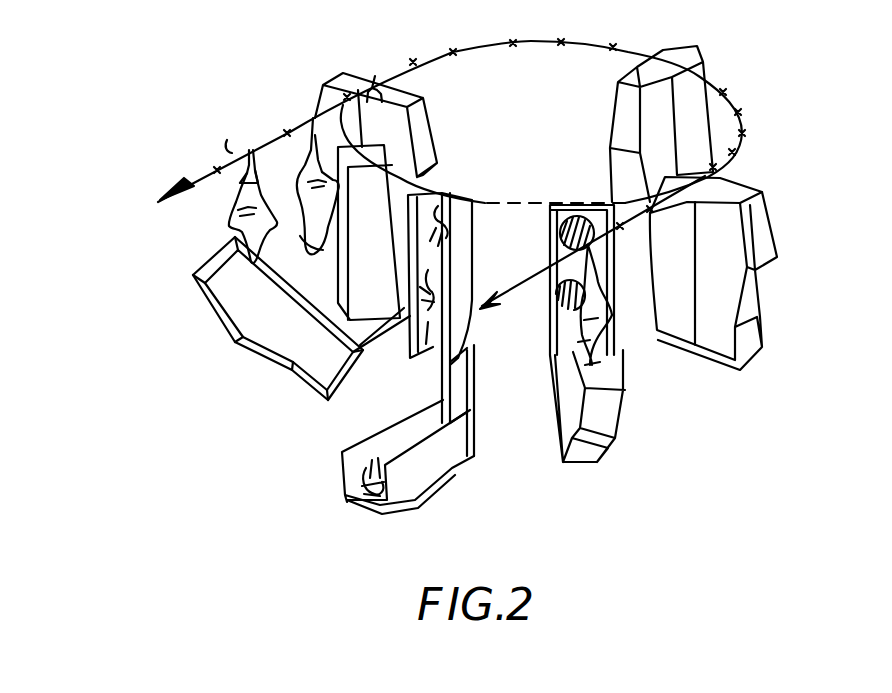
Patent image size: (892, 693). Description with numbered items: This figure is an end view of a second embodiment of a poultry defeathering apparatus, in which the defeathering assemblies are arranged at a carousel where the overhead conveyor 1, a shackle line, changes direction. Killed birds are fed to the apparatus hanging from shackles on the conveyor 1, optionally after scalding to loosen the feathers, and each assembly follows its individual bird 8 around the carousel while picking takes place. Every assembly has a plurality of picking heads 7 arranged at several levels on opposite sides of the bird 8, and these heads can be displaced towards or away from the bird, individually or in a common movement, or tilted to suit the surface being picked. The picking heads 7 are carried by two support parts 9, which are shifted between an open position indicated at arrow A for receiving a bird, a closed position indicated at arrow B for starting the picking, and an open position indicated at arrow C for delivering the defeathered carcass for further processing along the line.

The overhead conveyor 1 is at (272, 134).
The picking heads 7 is at (438, 208).
The bird 8 is at (230, 219).
The support parts 9 is at (476, 258).
The open position for receiving a bird A is at (190, 297).
The closed position for initiation of picking B is at (322, 74).
The open position for delivering the defeathered carcass C is at (632, 448).